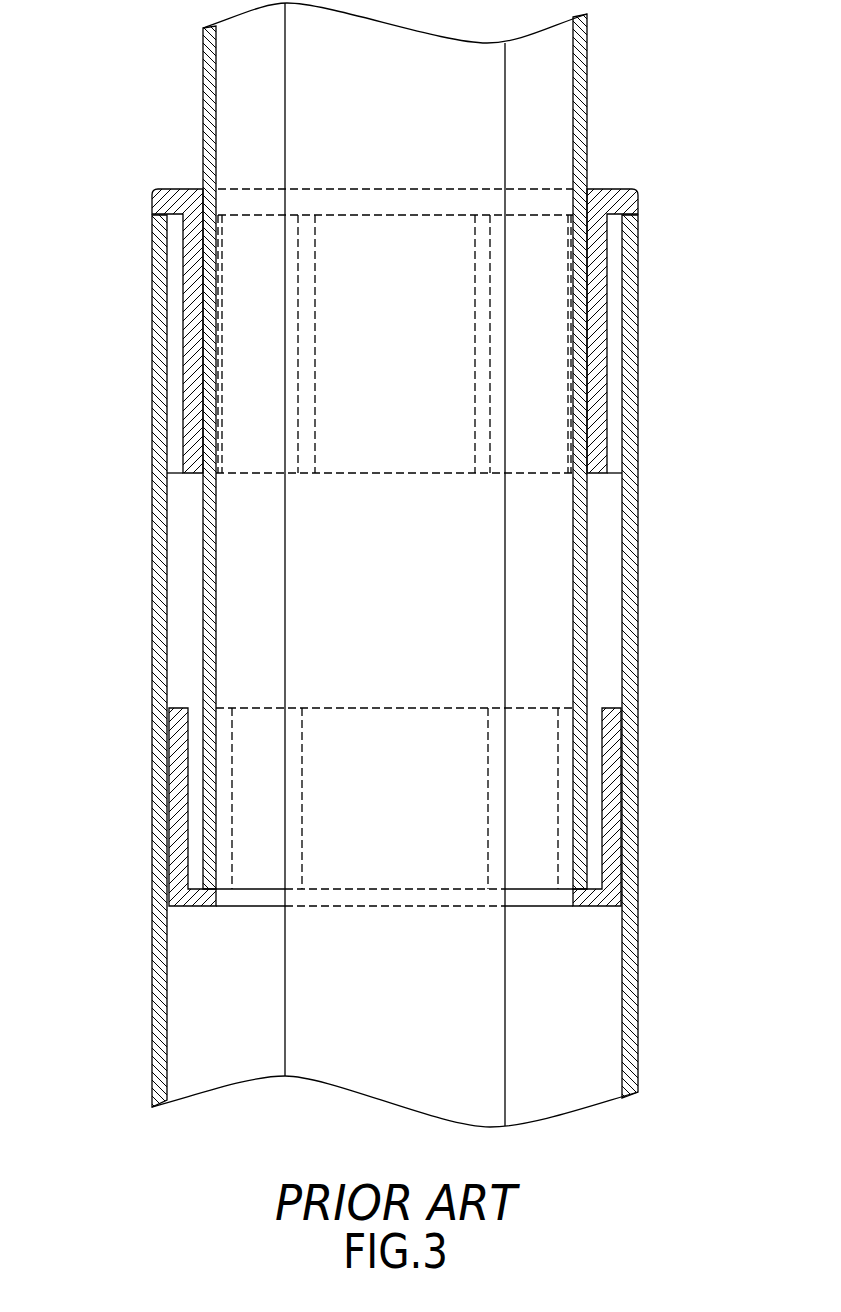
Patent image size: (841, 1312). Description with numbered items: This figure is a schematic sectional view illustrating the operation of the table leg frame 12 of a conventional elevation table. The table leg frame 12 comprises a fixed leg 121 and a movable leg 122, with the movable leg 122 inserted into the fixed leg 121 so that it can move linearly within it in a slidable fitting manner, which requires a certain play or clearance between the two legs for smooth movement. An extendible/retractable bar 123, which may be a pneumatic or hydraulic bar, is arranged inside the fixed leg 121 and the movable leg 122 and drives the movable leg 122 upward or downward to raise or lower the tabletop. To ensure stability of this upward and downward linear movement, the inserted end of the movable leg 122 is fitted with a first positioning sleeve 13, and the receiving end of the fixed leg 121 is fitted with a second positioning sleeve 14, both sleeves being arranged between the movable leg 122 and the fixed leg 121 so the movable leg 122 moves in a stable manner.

The table leg frame 12 is at (393, 565).
The fixed leg 121 is at (633, 584).
The movable leg 122 is at (587, 88).
The extendible/retractable bar 123 is at (505, 997).
The first positioning sleeve 13 is at (610, 815).
The second positioning sleeve 14 is at (598, 303).